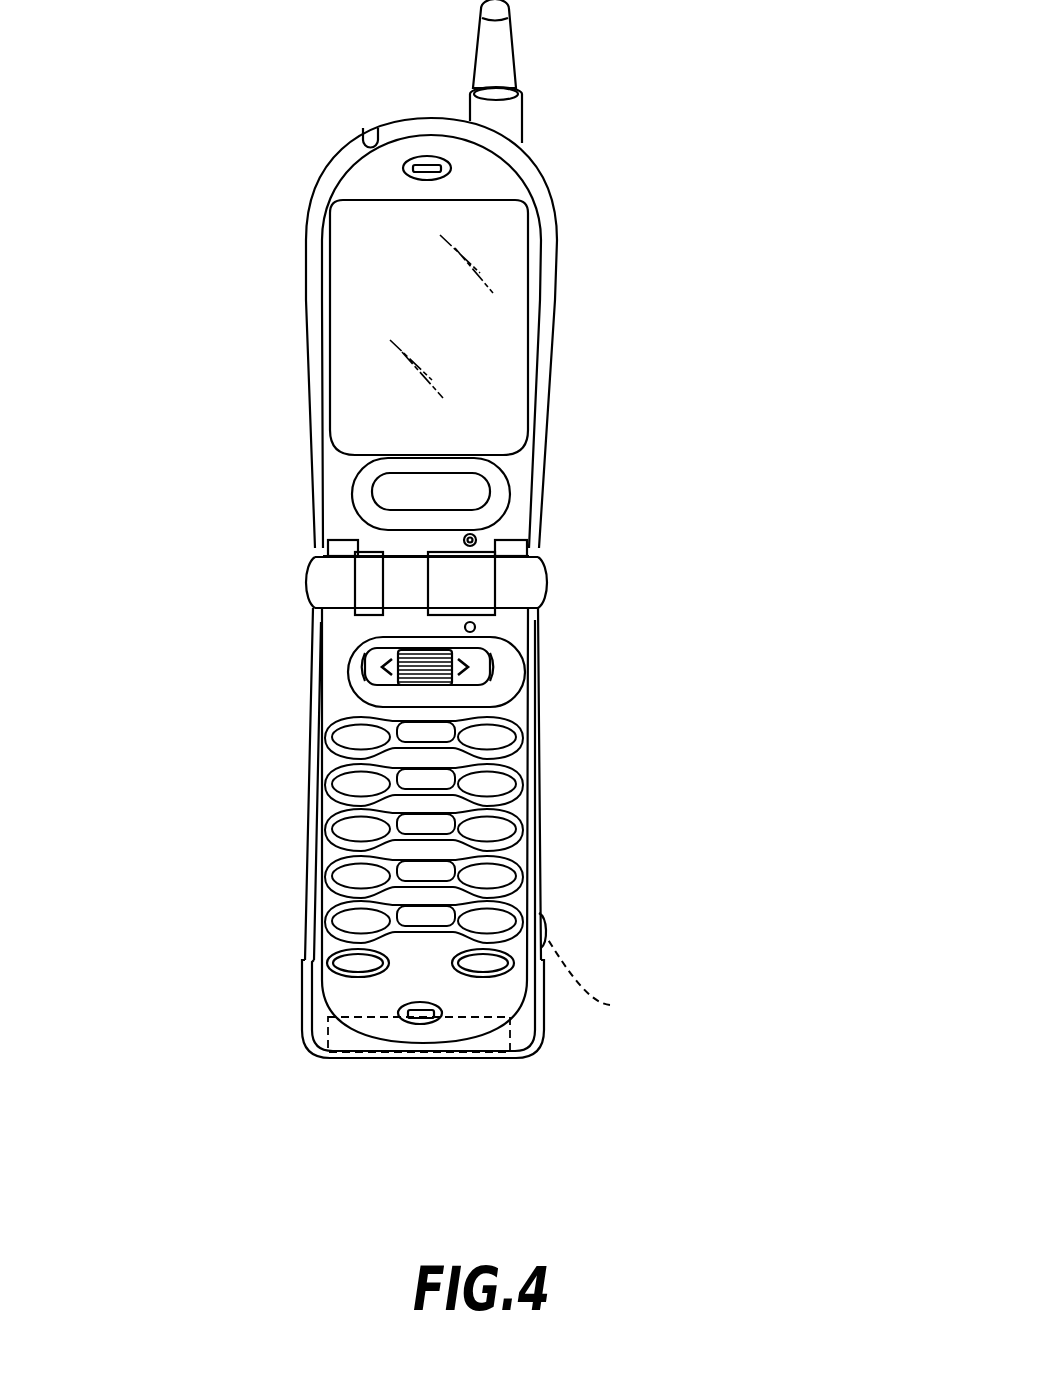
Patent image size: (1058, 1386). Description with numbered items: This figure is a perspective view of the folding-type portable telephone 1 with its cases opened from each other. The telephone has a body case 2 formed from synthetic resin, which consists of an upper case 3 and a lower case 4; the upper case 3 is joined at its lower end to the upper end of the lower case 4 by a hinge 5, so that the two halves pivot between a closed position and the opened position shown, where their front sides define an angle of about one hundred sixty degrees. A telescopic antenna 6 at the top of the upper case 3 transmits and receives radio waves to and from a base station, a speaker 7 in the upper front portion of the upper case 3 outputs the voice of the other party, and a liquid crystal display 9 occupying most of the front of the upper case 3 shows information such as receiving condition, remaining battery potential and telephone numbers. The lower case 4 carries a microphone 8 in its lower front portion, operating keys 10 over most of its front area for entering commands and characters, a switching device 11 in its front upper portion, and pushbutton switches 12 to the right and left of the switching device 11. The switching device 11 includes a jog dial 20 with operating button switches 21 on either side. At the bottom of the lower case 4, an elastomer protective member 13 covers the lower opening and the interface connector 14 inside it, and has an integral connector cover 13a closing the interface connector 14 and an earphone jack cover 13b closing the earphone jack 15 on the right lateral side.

The portable telephone 1 is at (650, 146).
The body case 2 is at (731, 477).
The upper case 3 is at (550, 418).
The lower case 4 is at (541, 714).
The hinge 5 is at (335, 585).
The telescopic antenna 6 is at (498, 47).
The speaker 7 is at (423, 163).
The microphone 8 is at (420, 1017).
The liquid crystal display 9 is at (505, 342).
The operating keys 10 is at (345, 787).
The switching device 11 is at (358, 637).
The pushbutton switches 12 is at (333, 665).
The protective member 13 is at (333, 1108).
The connector cover 13a is at (478, 1063).
The earphone jack cover 13b is at (545, 927).
The interface connector 14 is at (530, 1047).
The earphone jack 15 is at (601, 979).
The jog dial 20 is at (427, 658).
The operating button switches 21 is at (390, 683).